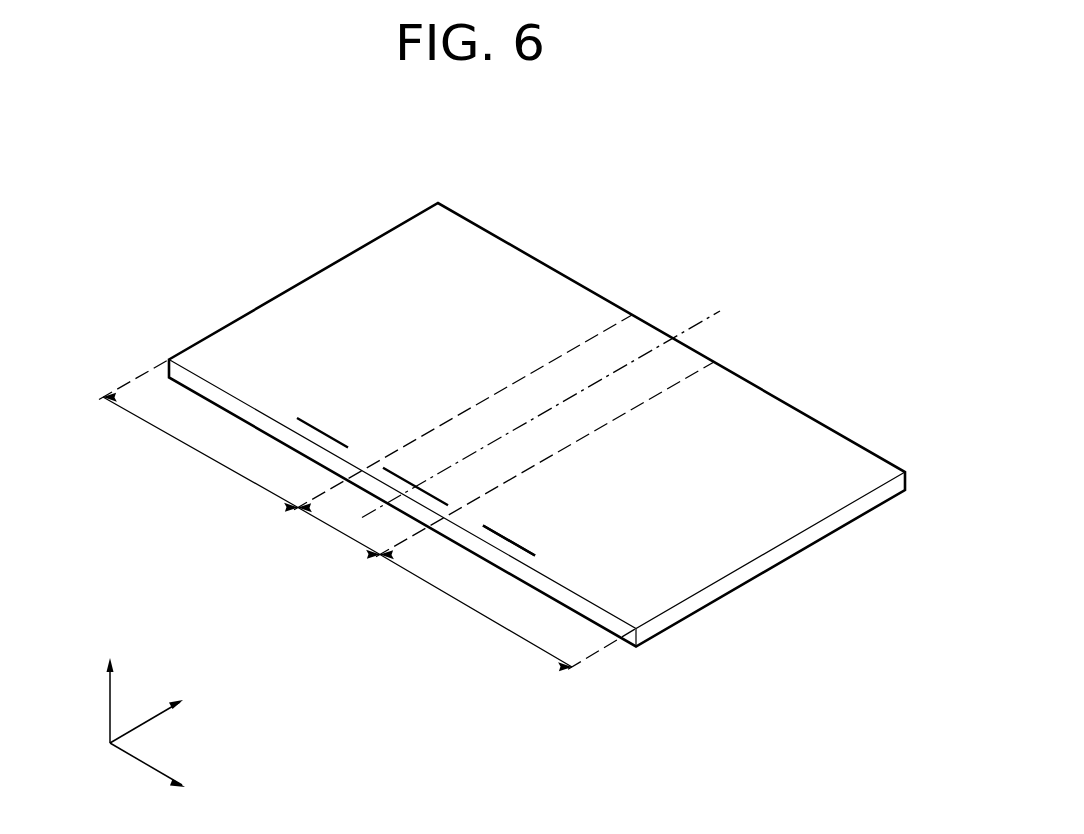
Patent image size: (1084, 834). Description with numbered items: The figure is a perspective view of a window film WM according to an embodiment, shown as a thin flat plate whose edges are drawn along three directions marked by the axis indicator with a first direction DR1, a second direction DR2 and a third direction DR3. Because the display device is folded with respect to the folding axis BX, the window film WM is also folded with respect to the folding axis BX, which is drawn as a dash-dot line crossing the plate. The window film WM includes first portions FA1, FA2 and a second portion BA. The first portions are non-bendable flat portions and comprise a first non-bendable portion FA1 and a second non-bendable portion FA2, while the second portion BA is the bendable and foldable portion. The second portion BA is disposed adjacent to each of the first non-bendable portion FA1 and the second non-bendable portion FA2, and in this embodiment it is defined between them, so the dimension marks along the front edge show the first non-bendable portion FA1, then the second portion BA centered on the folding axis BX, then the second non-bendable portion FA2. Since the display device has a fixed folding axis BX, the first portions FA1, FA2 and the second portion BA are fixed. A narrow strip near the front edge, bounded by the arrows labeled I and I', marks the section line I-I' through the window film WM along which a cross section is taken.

The window film WM is at (681, 197).
The folding axis BX is at (548, 403).
The first non-bendable portion FA1 is at (365, 412).
The second portion BA is at (510, 463).
The second non-bendable portion FA2 is at (536, 644).
The section line I is at (391, 487).
The section line I' is at (507, 559).
The first direction DR1 is at (168, 775).
The second direction DR2 is at (167, 714).
The third direction DR3 is at (110, 689).